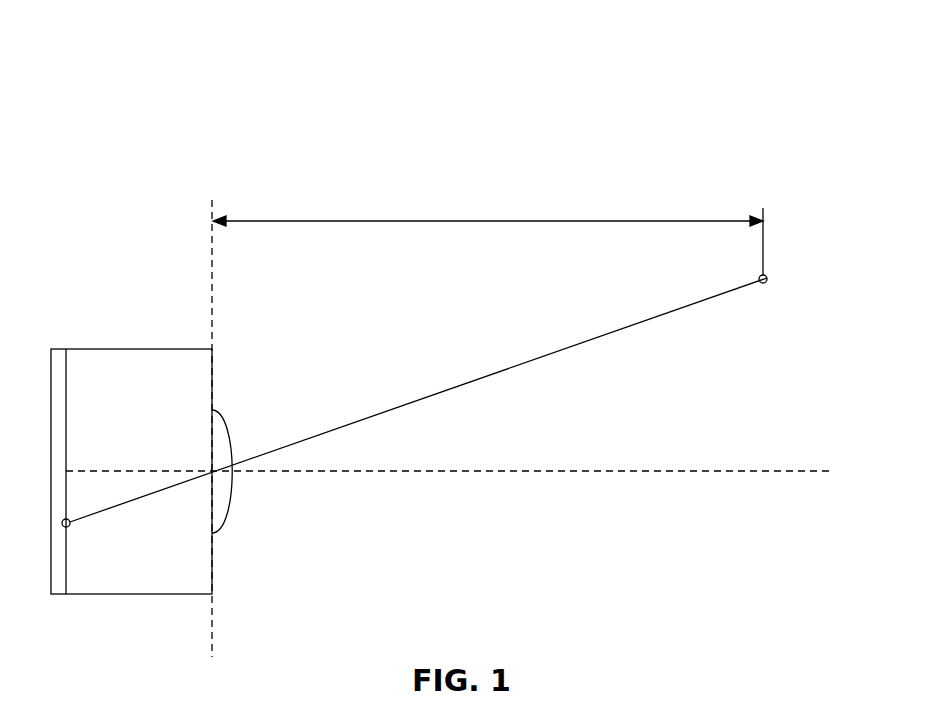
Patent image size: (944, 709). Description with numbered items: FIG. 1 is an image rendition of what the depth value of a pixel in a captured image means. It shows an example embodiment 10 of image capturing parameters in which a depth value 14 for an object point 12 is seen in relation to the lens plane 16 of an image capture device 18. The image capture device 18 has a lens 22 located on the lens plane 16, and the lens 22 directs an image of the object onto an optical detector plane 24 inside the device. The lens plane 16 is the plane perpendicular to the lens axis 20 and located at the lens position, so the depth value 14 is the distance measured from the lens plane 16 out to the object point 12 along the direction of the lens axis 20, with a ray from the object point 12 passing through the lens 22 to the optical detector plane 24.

The example embodiment 10 is at (148, 79).
The object point 12 is at (769, 283).
The depth value 14 is at (533, 221).
The lens plane 16 is at (210, 253).
The image capture device 18 is at (97, 349).
The lens axis 20 is at (640, 474).
The lens 22 is at (227, 426).
The optical detector plane 24 is at (66, 567).